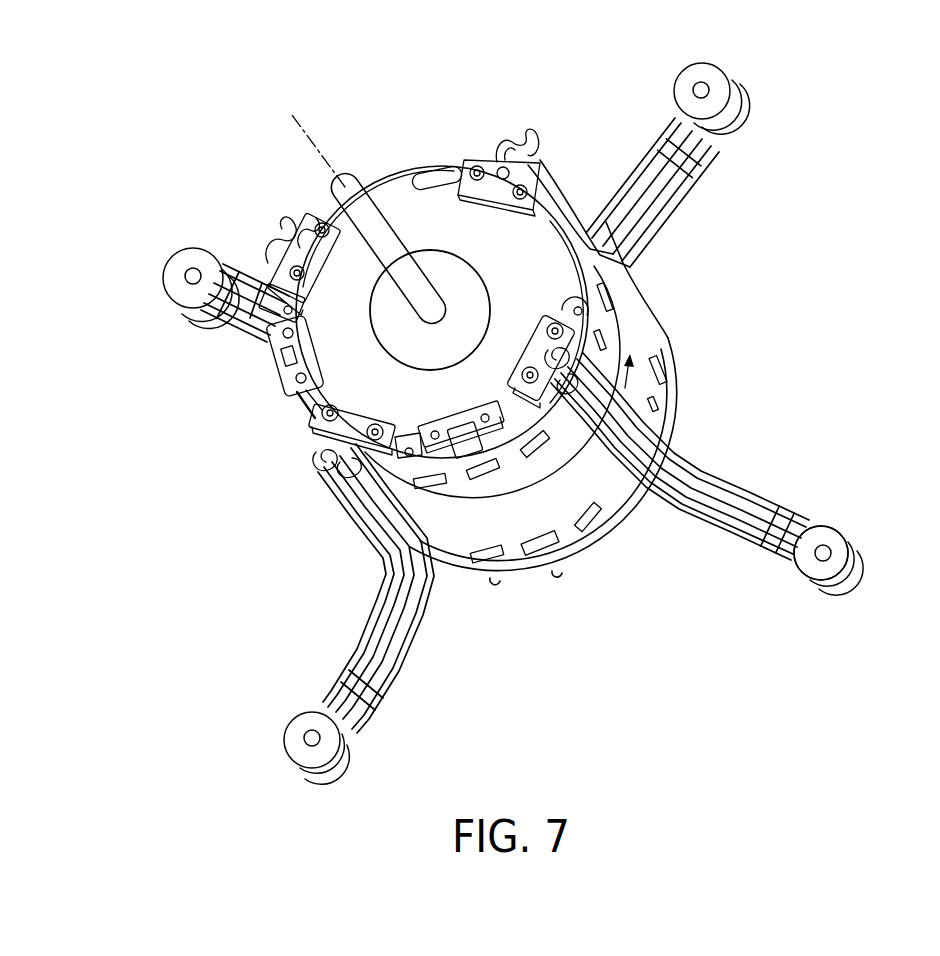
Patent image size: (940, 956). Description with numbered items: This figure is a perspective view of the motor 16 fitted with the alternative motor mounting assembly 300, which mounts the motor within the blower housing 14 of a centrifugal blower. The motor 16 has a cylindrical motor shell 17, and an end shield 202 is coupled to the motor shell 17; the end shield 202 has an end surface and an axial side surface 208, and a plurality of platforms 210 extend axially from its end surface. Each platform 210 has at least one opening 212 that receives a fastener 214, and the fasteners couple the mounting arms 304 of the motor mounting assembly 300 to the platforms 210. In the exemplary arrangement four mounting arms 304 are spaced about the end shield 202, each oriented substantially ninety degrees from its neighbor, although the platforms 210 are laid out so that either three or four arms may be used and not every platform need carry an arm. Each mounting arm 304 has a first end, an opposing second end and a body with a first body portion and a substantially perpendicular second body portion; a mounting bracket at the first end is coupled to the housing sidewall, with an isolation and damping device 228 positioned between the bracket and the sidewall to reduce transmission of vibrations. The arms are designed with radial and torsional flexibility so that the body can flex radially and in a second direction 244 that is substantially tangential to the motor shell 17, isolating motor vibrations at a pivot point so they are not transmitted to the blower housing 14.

The blower housing 14 is at (303, 127).
The motor 16 is at (457, 540).
The motor shell 17 is at (510, 535).
The end shield 202 is at (398, 197).
The axial side surface 208 is at (580, 279).
The platform 210 is at (283, 387).
The opening 212 is at (280, 340).
The fastener 214 is at (483, 158).
The isolation and damping device 228 is at (823, 534).
The second direction 244 is at (569, 455).
The motor mounting assembly 300 is at (577, 116).
The mounting arm 304 is at (303, 242).